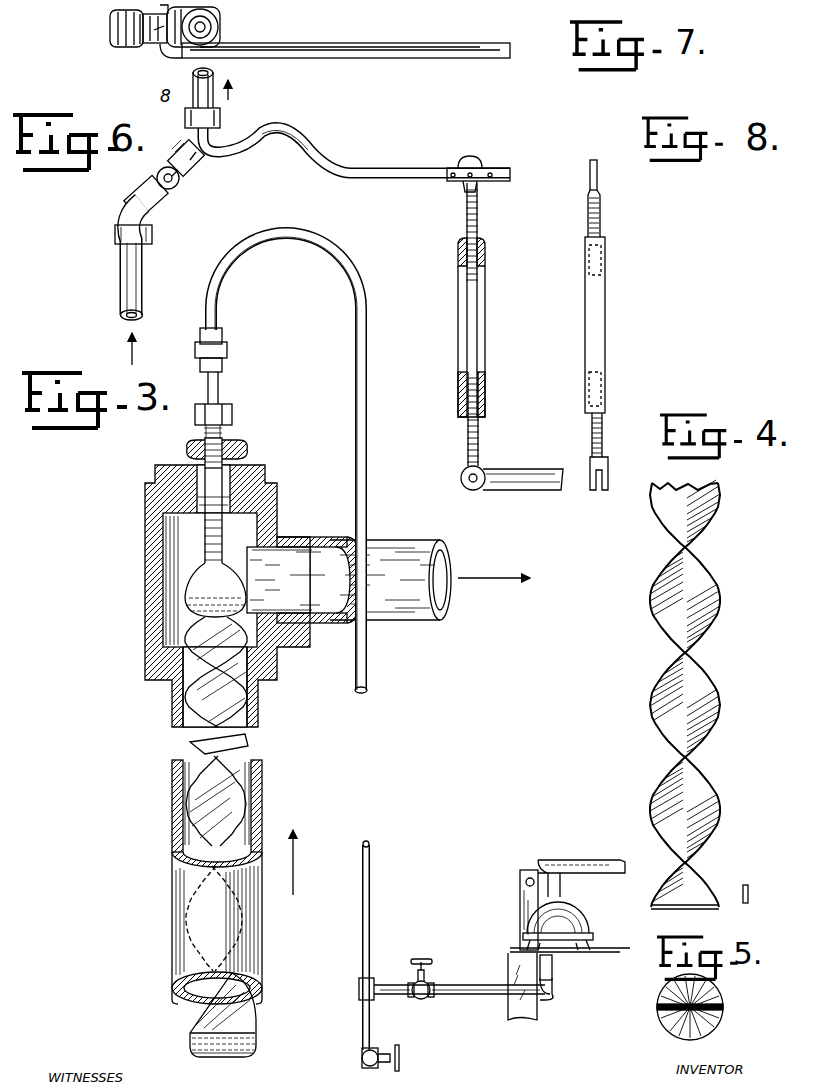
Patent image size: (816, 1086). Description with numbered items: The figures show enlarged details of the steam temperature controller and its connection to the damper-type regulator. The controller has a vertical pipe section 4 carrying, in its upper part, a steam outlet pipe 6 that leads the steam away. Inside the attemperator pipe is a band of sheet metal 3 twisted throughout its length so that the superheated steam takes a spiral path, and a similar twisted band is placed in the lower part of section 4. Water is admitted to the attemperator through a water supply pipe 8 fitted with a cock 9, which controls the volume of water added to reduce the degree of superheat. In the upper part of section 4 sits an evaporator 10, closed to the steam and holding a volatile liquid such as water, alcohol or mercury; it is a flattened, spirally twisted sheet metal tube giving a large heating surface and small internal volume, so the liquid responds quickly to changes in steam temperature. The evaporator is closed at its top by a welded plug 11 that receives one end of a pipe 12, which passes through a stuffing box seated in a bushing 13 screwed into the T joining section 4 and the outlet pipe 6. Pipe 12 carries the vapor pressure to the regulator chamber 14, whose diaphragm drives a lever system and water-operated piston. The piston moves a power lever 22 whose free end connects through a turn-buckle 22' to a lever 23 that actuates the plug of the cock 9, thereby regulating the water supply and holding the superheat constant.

In FIG. 4, the band of sheet metal 3 is at (698, 692).
In FIG. 5, the band of sheet metal 3 is at (712, 1022).
In FIG. 3, the band of sheet metal 3 is at (216, 794).
In FIG. 3, the second section 4 is at (265, 975).
In FIG. 3, the steam outlet pipe 6 is at (393, 537).
In FIG. 6, the water supply pipe 8 is at (141, 306).
In FIG. 7, the cock 9 is at (164, 47).
In FIG. 6, the cock 9 is at (173, 189).
In FIG. 3, the evaporator 10 is at (258, 1044).
In FIG. 3, the plug 11 is at (219, 542).
In FIG. 3, the pipe 12 is at (220, 392).
In FIG. 3, the bushing 13 is at (240, 450).
In FIG. 3, the chamber 14 is at (582, 922).
In FIG. 3, the power lever 22 is at (512, 467).
In FIG. 8, the turn-buckle 22' is at (618, 325).
In FIG. 3, the turn-buckle 22' is at (450, 324).
In FIG. 6, the lever 23 is at (288, 141).